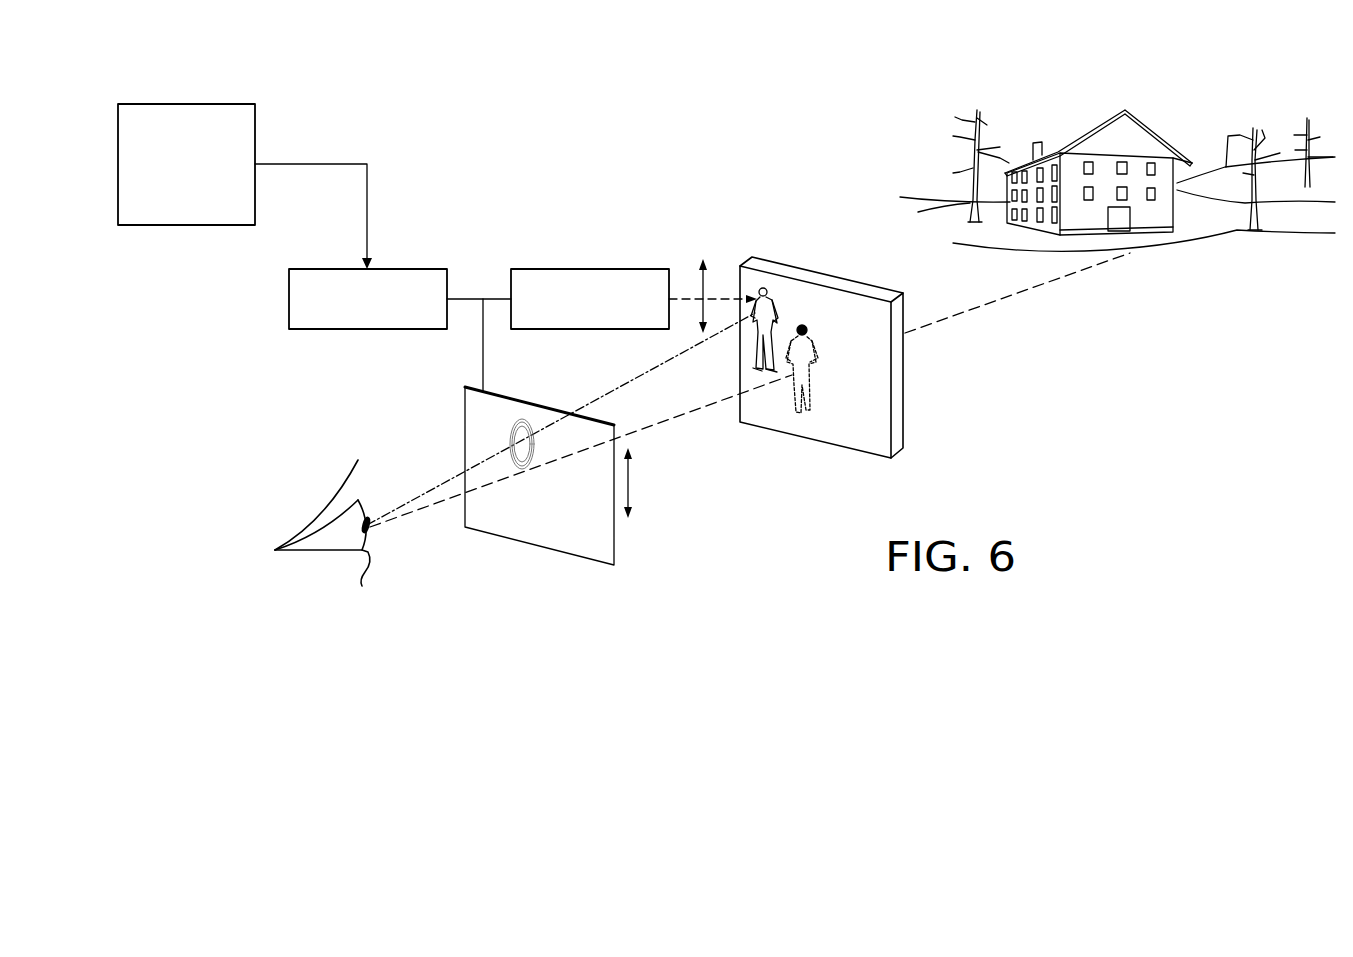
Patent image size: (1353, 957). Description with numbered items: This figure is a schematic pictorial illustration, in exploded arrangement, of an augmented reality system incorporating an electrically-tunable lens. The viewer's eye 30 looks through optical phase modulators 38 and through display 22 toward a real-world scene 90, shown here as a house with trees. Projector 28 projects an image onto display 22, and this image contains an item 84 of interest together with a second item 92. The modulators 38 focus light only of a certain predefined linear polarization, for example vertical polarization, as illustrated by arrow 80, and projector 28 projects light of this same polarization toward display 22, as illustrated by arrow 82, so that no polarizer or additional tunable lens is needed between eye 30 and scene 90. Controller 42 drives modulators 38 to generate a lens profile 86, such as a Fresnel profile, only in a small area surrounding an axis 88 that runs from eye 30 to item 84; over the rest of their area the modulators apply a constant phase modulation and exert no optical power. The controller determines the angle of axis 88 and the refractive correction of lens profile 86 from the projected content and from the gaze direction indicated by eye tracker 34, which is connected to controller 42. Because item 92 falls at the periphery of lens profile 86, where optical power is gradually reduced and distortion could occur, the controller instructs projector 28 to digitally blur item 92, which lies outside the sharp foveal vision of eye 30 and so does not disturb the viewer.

The display 22 is at (897, 382).
The projector 28 is at (535, 269).
The eye 30 is at (310, 551).
The eye tracker 34 is at (118, 142).
The optical phase modulators 38 is at (615, 533).
The controller 42 is at (425, 269).
The arrow 80 is at (628, 467).
The arrow 82 is at (694, 277).
The item 84 is at (785, 288).
The lens profile 86 is at (508, 442).
The axis 88 is at (622, 395).
The scene 90 is at (1104, 70).
The item 92 is at (808, 334).